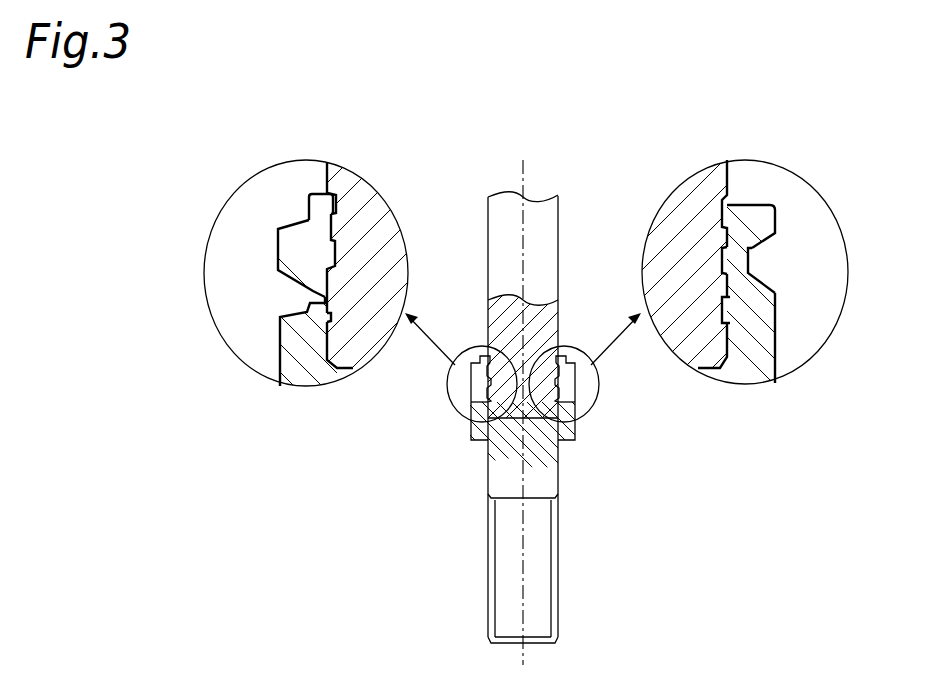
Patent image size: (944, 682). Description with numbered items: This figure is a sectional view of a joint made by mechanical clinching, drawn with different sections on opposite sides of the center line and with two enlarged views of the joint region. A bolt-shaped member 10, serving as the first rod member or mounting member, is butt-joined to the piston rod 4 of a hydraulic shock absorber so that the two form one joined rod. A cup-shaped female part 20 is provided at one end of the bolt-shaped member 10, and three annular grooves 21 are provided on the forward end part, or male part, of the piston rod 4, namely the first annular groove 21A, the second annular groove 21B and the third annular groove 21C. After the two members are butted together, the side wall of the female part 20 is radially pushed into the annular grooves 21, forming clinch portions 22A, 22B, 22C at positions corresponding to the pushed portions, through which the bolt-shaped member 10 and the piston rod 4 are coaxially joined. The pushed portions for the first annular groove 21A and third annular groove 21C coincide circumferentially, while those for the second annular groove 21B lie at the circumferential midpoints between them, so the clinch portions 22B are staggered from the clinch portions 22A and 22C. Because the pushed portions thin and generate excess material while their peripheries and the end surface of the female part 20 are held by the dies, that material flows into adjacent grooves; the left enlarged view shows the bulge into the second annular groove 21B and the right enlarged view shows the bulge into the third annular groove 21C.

The piston rod 4 is at (484, 219).
The bolt-shaped member 10 is at (484, 559).
The female part 20 is at (293, 342).
The annular grooves 21 is at (470, 396).
The first annular groove 21A is at (308, 303).
The second annular groove 21B is at (300, 243).
The third annular groove 21C is at (317, 196).
The clinch portions 22A is at (350, 370).
The clinch portions 22B is at (720, 270).
The clinch portions 22C is at (330, 212).